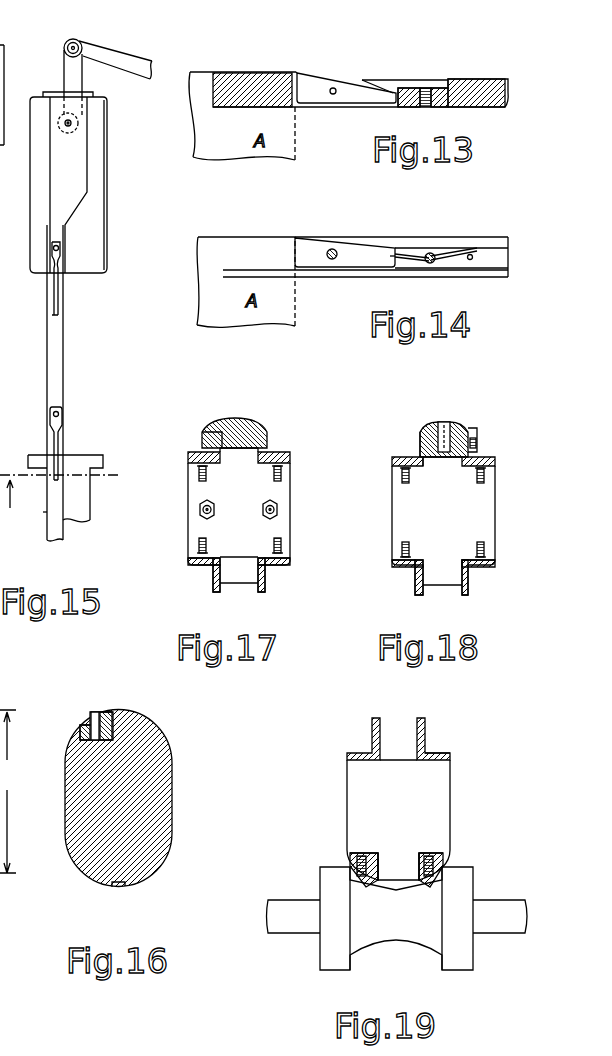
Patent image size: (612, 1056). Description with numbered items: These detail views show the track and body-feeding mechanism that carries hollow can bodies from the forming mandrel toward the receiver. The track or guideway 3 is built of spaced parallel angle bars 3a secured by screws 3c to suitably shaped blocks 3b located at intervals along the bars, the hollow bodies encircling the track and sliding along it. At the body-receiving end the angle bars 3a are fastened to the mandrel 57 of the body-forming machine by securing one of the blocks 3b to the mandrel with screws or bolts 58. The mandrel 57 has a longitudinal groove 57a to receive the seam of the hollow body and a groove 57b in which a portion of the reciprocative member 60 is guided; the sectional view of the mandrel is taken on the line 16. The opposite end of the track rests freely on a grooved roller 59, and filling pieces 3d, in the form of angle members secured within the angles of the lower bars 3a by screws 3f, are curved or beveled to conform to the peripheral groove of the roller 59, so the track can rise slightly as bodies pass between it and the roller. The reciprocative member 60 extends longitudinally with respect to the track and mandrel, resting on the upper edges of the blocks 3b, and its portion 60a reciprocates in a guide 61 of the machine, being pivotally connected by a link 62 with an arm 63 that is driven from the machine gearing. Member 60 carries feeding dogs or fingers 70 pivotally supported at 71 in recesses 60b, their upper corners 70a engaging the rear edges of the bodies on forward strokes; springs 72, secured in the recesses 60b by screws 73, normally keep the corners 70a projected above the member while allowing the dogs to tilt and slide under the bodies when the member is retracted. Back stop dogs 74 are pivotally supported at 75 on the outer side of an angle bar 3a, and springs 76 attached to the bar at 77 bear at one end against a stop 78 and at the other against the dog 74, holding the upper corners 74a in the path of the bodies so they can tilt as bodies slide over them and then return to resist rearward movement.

In FIG. 17, the track or guideway 3 is at (239, 509).
In FIG. 18, the track or guideway 3 is at (443, 512).
In FIG. 19, the track or guideway 3 is at (398, 799).
In FIG. 14, the angle bars 3a is at (495, 248).
In FIG. 17, the angle bars 3a is at (220, 558).
In FIG. 18, the angle bars 3a is at (423, 466).
In FIG. 19, the angle bars 3a is at (378, 853).
In FIG. 17, the blocks 3b is at (239, 473).
In FIG. 18, the blocks 3b is at (442, 496).
In FIG. 19, the blocks 3b is at (399, 781).
In FIG. 17, the screws 3c is at (278, 458).
In FIG. 18, the screws 3c is at (486, 460).
In FIG. 19, the screws 3c is at (360, 853).
In FIG. 19, the filling pieces 3d is at (322, 870).
In FIG. 19, the screws 3f is at (436, 753).
In FIG. 15, the section line 16 is at (69, 487).
In FIG. 15, the mandrel 57 is at (78, 512).
In FIG. 16, the mandrel 57 is at (152, 783).
In FIG. 16, the longitudinal groove 57a is at (114, 886).
In FIG. 15, the groove 57b is at (45, 512).
In FIG. 16, the groove 57b is at (120, 714).
In FIG. 17, the screws or bolts 58 is at (277, 510).
In FIG. 19, the grooved roller 59 is at (452, 878).
In FIG. 13, the reciprocative member 60 is at (490, 107).
In FIG. 15, the reciprocative member 60 is at (54, 353).
In FIG. 17, the reciprocative member 60 is at (249, 418).
In FIG. 18, the reciprocative member 60 is at (458, 422).
In FIG. 16, the reciprocative member 60 is at (104, 712).
In FIG. 15, the portion of reciprocative member 60a is at (68, 185).
In FIG. 13, the recesses 60b is at (363, 80).
In FIG. 18, the recesses 60b is at (420, 440).
In FIG. 15, the guide 61 is at (93, 220).
In FIG. 15, the link 62 is at (72, 68).
In FIG. 15, the arm 63 is at (119, 59).
In FIG. 13, the dogs or fingers 70 is at (312, 93).
In FIG. 18, the dogs or fingers 70 is at (441, 422).
In FIG. 16, the dogs or fingers 70 is at (92, 712).
In FIG. 13, the upper corners of dogs 70a is at (296, 72).
In FIG. 13, the pivot 71 is at (336, 94).
In FIG. 13, the springs 72 is at (394, 88).
In FIG. 13, the screws 73 is at (432, 100).
In FIG. 14, the back stop dogs 74 is at (355, 253).
In FIG. 18, the back stop dogs 74 is at (478, 432).
In FIG. 14, the upper corners of back stop dogs 74a is at (296, 237).
In FIG. 14, the pivot 75 is at (330, 259).
In FIG. 18, the pivot 75 is at (478, 443).
In FIG. 14, the springs 76 is at (412, 255).
In FIG. 14, the attachment point 77 is at (433, 263).
In FIG. 14, the stop 78 is at (472, 261).